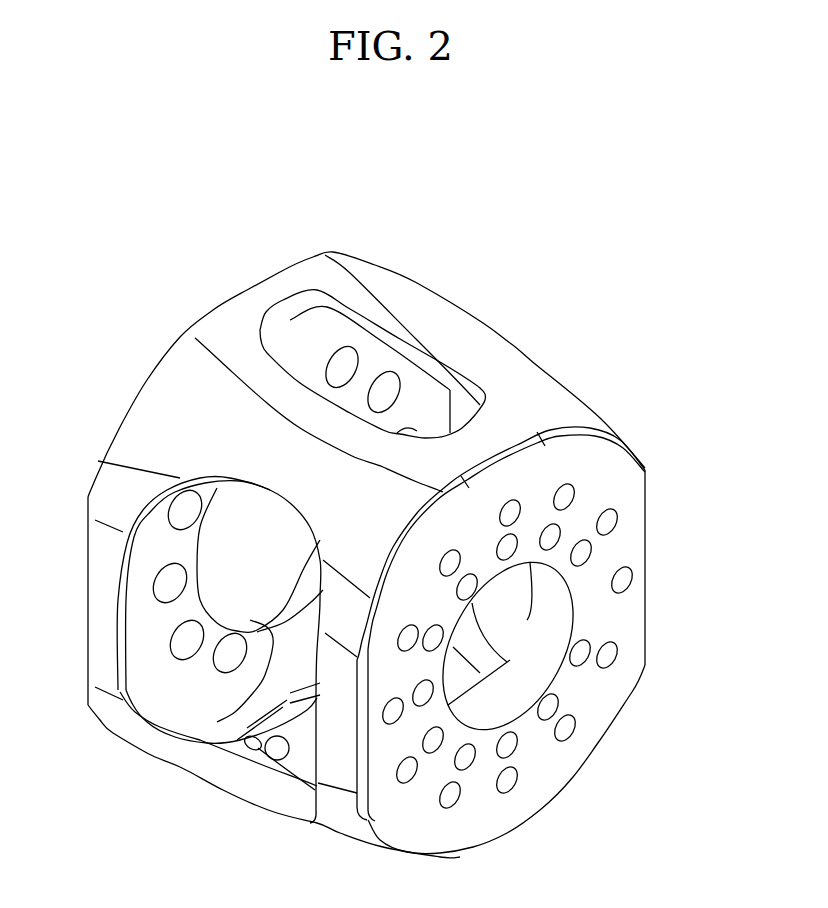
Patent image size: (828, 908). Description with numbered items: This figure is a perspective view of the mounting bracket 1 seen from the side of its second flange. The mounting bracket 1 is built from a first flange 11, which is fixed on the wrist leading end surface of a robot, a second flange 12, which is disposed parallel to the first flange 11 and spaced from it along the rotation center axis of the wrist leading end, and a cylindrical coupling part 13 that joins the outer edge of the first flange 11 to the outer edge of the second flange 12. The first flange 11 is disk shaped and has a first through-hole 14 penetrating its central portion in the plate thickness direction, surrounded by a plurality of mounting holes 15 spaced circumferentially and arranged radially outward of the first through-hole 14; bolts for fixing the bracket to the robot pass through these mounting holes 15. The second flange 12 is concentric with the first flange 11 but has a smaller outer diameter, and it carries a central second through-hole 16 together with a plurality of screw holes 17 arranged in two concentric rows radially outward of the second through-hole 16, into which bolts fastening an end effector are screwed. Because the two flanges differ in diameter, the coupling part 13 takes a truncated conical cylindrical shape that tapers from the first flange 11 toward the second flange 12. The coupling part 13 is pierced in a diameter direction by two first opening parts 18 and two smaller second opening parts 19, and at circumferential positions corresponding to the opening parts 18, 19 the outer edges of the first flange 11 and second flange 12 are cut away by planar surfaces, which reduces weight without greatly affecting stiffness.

The mounting bracket 1 is at (614, 288).
The first flange 11 is at (157, 693).
The second flange 12 is at (480, 819).
The coupling part 13 is at (460, 296).
The first through-hole 14 is at (280, 642).
The mounting holes 15 is at (177, 652).
The second through-hole 16 is at (528, 705).
The screw holes 17 is at (515, 705).
The first opening parts 18 is at (478, 640).
The second opening parts 19 is at (350, 303).